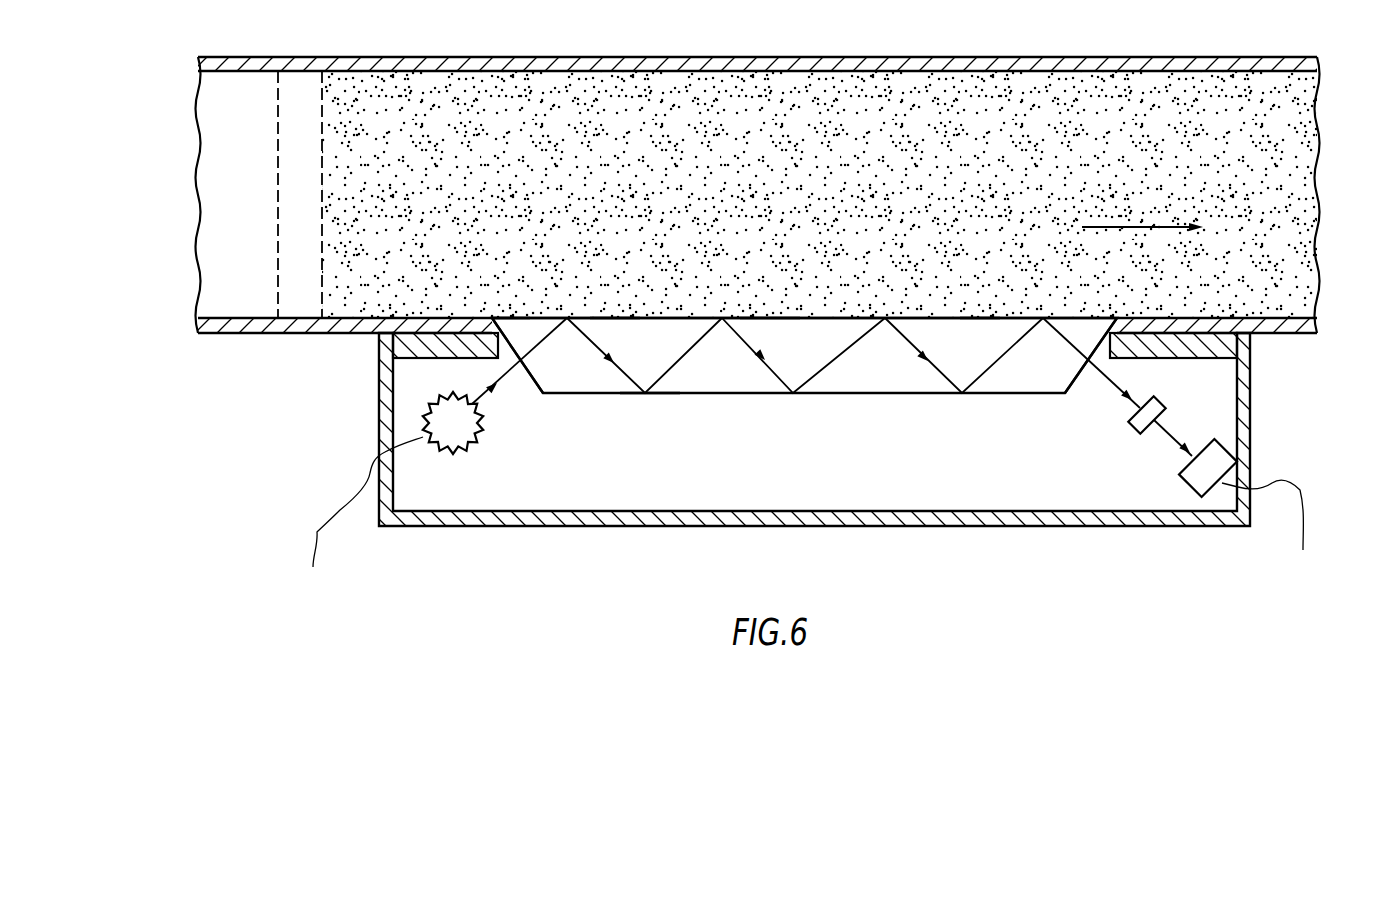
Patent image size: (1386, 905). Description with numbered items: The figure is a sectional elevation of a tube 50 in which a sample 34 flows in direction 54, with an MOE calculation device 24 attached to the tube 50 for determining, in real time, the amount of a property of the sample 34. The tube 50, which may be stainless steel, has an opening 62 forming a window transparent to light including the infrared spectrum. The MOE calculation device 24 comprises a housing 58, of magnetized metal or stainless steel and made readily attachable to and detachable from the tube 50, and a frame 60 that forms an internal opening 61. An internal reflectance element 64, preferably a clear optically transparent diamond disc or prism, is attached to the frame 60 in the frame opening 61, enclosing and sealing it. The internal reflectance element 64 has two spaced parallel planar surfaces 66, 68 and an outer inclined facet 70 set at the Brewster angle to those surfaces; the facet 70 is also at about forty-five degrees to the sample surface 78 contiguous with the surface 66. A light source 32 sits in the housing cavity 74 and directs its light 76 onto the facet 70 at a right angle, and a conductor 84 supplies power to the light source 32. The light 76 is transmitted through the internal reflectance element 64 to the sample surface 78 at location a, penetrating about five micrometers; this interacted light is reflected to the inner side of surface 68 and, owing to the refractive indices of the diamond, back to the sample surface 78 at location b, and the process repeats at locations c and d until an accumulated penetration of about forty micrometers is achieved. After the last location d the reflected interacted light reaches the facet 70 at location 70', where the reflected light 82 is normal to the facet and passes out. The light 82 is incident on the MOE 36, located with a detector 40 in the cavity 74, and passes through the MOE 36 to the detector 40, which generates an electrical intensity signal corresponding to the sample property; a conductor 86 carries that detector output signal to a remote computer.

The MOE calculation device 24 is at (557, 555).
The light source 32 is at (455, 454).
The sample 34 is at (345, 221).
The MOE 36 is at (1130, 432).
The detector 40 is at (1197, 493).
The tube 50 is at (288, 333).
The direction 54 is at (1137, 227).
The housing 58 is at (1112, 527).
The frame 60 is at (417, 360).
The frame opening 61 is at (506, 330).
The opening 62 is at (770, 318).
The internal reflectance element 64 is at (717, 383).
The planar surface 66 is at (612, 318).
The planar surface 68 is at (645, 393).
The inclined facet 70 is at (539, 390).
The facet location 70' is at (1202, 357).
The housing cavity 74 is at (943, 510).
The light 76 is at (495, 385).
The sample surface 78 is at (983, 318).
The reflected light 82 is at (1113, 388).
The conductor 84 is at (317, 532).
The conductor 86 is at (1300, 490).
The location a is at (567, 320).
The location b is at (722, 320).
The location c is at (885, 320).
The location d is at (1043, 320).